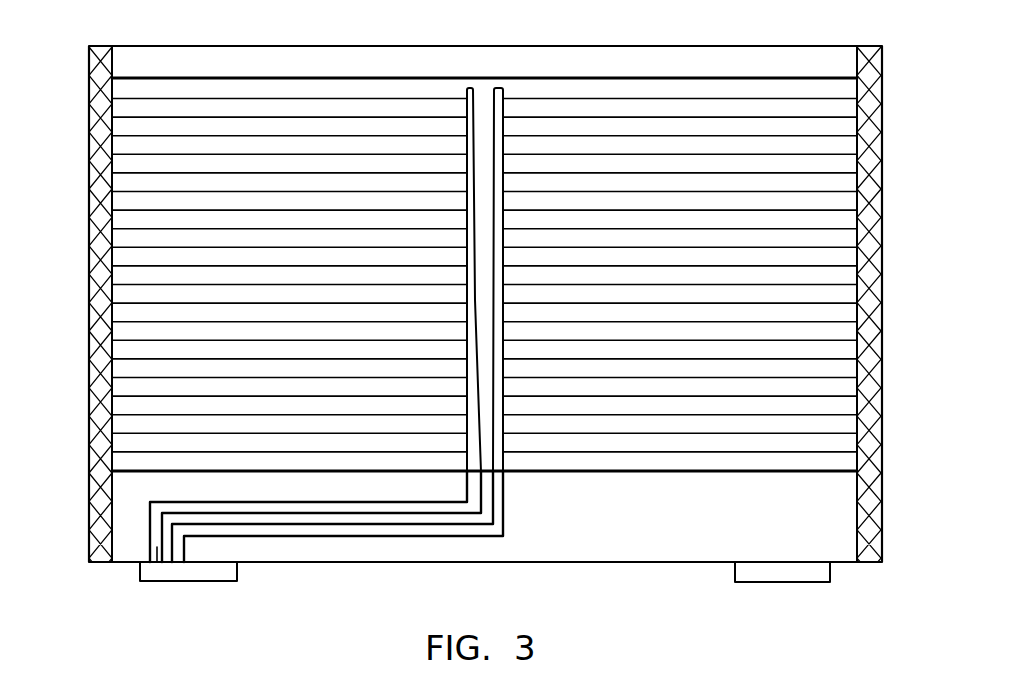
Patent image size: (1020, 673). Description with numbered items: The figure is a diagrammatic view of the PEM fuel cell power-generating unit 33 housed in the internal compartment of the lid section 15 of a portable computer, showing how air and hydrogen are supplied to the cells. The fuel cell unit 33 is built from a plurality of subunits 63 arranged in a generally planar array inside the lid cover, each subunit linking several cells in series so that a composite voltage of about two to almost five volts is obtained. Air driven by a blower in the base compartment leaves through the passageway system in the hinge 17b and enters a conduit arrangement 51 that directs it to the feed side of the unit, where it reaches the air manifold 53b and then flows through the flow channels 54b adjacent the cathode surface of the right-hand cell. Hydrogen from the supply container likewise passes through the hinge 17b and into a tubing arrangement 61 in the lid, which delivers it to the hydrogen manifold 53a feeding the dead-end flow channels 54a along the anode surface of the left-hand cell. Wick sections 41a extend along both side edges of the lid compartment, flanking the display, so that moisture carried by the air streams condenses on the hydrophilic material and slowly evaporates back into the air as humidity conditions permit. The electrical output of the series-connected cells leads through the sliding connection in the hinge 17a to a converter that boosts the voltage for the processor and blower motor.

The lid section 15 is at (78, 408).
The PEM fuel cell power-generating unit 33 is at (310, 37).
The wick section 41a is at (87, 185).
The subunit 63 is at (615, 77).
The hydrogen flow channels 54a is at (206, 172).
The air flow channels 54b is at (757, 343).
The hydrogen manifold 53a is at (467, 459).
The air manifold 53b is at (500, 459).
The conduit arrangement 51 is at (333, 528).
The tubing arrangement 61 is at (152, 582).
The hinge 17a is at (195, 570).
The hinge 17b is at (765, 573).